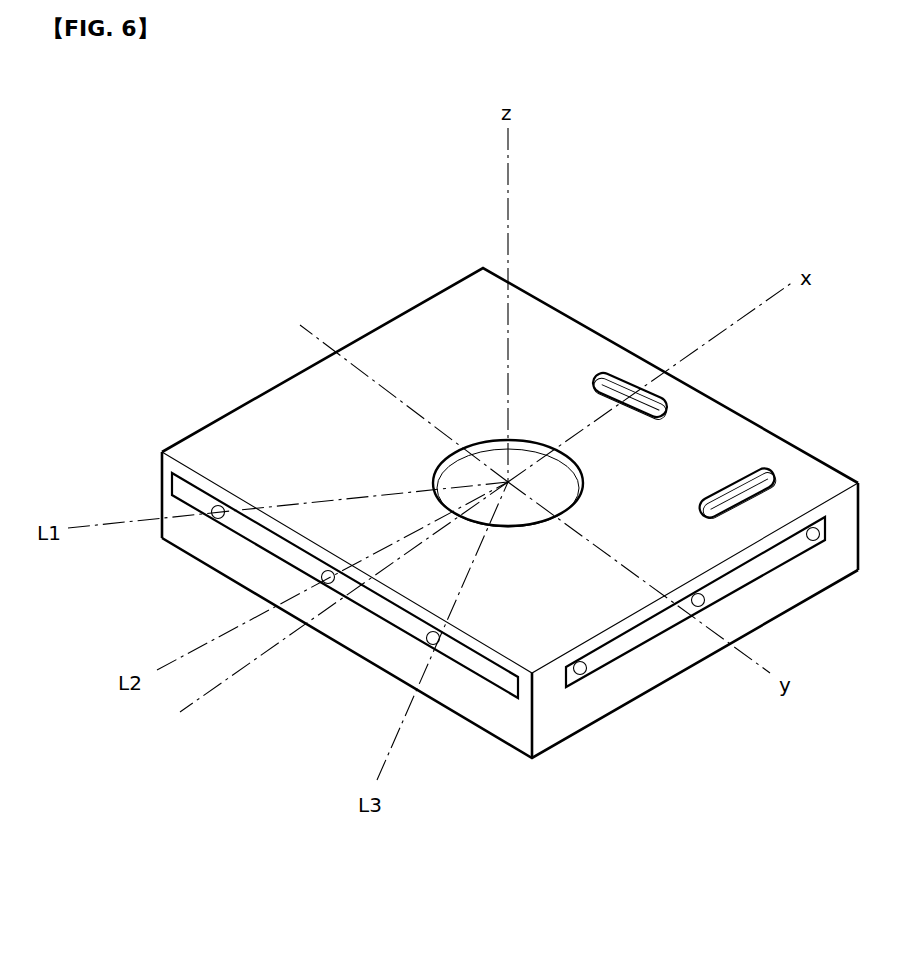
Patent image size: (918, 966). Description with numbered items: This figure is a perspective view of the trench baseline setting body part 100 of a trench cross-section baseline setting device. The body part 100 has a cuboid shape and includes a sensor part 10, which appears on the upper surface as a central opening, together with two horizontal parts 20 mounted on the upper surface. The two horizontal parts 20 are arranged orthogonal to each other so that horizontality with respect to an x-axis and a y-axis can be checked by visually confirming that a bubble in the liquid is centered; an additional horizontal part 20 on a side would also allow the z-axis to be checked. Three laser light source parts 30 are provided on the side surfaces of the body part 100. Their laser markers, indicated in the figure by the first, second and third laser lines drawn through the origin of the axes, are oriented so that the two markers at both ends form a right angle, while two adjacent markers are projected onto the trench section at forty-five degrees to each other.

The trench baseline setting body part 100 is at (607, 338).
The sensor part 10 is at (462, 448).
The horizontal part 20 is at (653, 402).
The laser light source part 30 is at (214, 517).